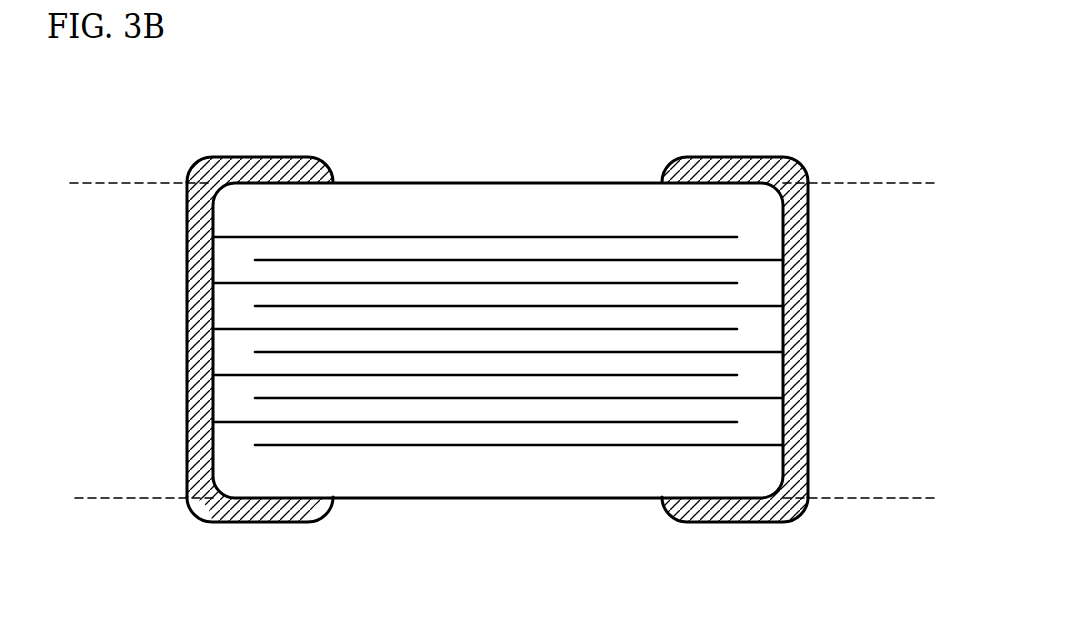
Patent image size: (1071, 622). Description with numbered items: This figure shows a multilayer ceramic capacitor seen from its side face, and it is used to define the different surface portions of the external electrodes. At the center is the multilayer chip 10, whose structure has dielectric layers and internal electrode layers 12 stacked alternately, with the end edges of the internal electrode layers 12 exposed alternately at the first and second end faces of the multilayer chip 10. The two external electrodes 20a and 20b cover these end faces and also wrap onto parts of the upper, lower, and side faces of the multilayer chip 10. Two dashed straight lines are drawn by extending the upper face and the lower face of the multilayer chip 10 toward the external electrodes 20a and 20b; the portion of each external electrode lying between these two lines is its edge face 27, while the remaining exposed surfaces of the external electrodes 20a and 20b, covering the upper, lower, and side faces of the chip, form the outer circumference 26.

The multilayer chip 10 is at (580, 158).
The internal electrode layers 12 is at (454, 260).
The external electrode 20a is at (177, 160).
The external electrode 20b is at (807, 152).
The outer circumference 26 is at (252, 158).
The edge face 27 is at (187, 328).